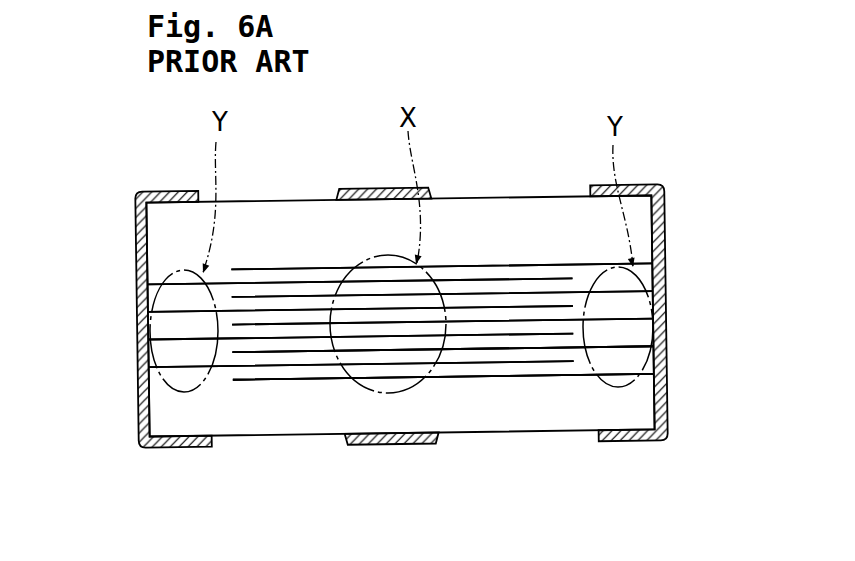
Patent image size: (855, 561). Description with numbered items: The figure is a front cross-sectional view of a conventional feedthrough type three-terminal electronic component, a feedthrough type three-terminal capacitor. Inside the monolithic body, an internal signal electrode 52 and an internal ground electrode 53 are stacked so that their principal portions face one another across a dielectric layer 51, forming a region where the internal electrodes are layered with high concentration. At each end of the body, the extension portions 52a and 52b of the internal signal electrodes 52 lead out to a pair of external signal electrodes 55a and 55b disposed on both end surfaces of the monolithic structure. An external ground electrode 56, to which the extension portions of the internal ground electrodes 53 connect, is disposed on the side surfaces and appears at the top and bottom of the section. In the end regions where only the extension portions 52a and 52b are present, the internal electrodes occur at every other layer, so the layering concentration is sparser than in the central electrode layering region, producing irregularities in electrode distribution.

The dielectric layer 51 is at (533, 300).
The internal signal electrode 52 is at (307, 337).
The extension portion 52a is at (172, 337).
The extension portion 52b is at (628, 357).
The internal ground electrode 53 is at (518, 346).
The external signal electrode 55a is at (136, 230).
The external signal electrode 55b is at (667, 226).
The external ground electrode 56 is at (361, 188).